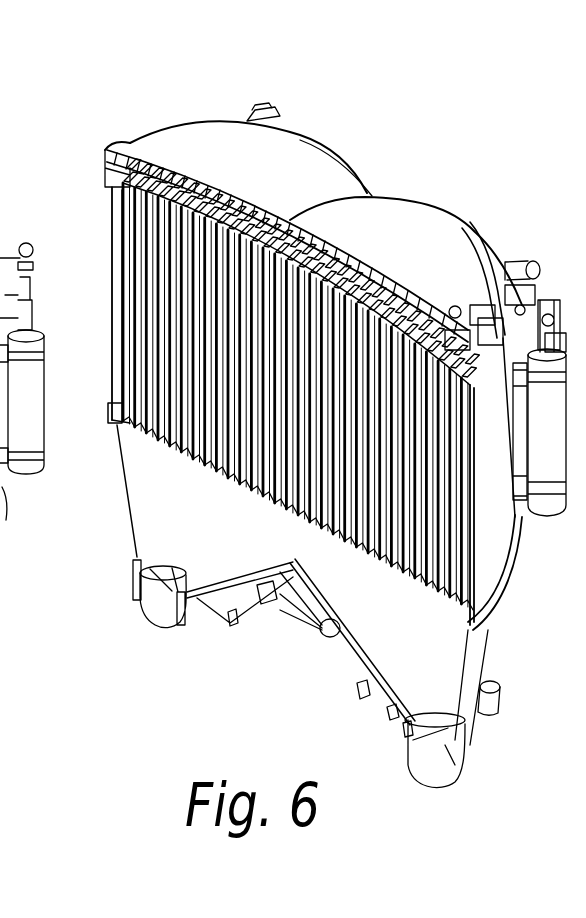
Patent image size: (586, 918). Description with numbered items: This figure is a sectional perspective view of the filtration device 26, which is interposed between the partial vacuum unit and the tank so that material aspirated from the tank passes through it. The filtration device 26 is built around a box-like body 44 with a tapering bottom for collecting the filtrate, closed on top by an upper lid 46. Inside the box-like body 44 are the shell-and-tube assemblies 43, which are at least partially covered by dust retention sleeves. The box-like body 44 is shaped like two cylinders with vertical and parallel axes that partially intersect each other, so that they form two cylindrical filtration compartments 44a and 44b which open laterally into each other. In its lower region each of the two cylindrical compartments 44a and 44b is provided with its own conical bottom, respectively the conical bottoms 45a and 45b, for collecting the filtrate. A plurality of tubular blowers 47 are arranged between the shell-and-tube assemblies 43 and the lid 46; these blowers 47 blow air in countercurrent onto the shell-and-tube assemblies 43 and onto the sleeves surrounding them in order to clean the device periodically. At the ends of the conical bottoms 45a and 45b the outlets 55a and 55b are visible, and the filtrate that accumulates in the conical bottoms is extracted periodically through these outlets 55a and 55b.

The filtration device 26 is at (128, 118).
The shell-and-tube assemblies 43 is at (287, 390).
The box-like body 44 is at (0, 480).
The cylindrical filtration compartment 44a is at (120, 297).
The cylindrical filtration compartment 44b is at (433, 497).
The conical bottom 45a is at (165, 520).
The conical bottom 45b is at (357, 638).
The upper lid 46 is at (379, 222).
The tubular blowers 47 is at (220, 180).
The outlet 55a is at (165, 622).
The outlet 55b is at (430, 768).